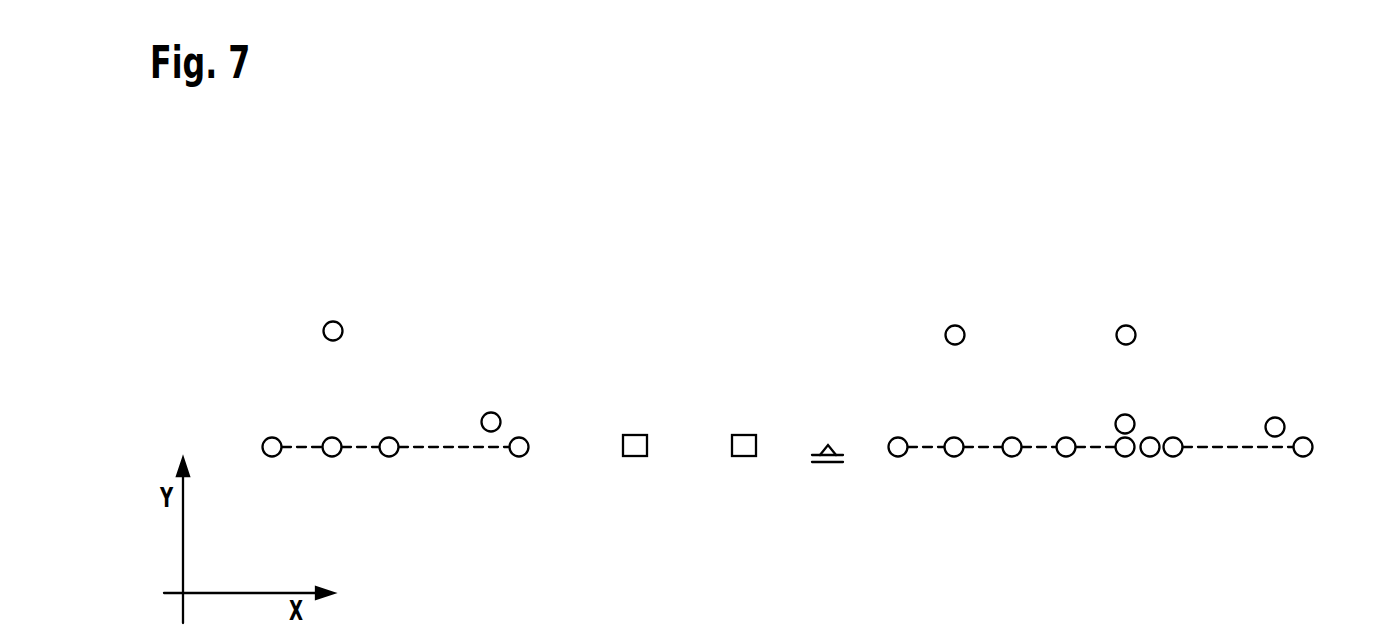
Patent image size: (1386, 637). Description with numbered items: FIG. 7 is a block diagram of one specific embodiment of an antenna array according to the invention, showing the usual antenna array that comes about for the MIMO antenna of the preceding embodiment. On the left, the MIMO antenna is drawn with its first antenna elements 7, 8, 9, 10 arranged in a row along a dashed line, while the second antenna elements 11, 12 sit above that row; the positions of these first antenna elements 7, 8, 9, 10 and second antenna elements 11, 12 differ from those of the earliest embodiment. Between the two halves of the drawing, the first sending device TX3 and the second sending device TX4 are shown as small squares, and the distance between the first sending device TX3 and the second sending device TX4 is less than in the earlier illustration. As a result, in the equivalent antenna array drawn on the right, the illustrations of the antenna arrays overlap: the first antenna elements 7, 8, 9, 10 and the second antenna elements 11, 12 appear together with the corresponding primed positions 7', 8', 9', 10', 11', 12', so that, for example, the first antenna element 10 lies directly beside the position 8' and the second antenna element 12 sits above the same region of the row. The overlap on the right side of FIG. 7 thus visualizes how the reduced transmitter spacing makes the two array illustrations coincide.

The first antenna element 7 is at (585, 489).
The first antenna element 8 is at (643, 489).
The first antenna element 9 is at (700, 489).
The first antenna element 10 is at (834, 489).
The second antenna element 11 is at (644, 281).
The second antenna element 12 is at (806, 371).
The first virtual receiver position 7' is at (1070, 489).
The second virtual receiver position 8' is at (1117, 489).
The third virtual receiver position 9' is at (1184, 489).
The fourth virtual receiver position 10' is at (1307, 489).
The first virtual transmitter position 11' is at (1129, 282).
The second virtual transmitter position 12' is at (1280, 372).
The first sending device TX3 is at (636, 456).
The second sending device TX4 is at (745, 456).